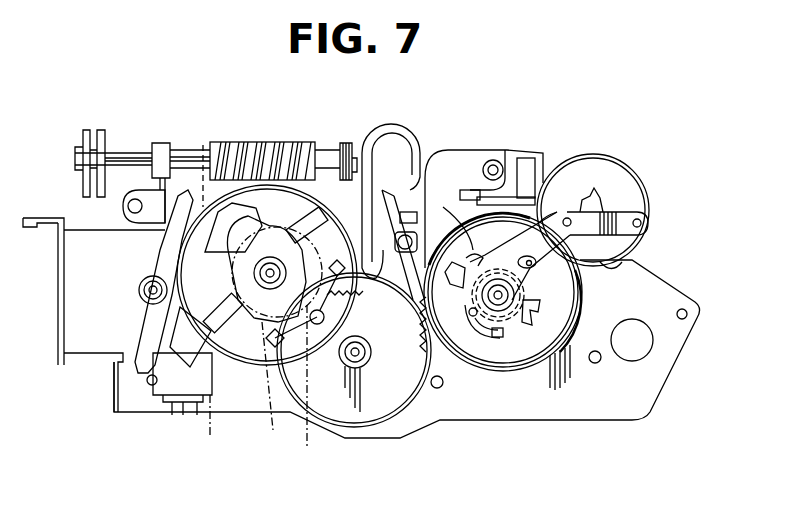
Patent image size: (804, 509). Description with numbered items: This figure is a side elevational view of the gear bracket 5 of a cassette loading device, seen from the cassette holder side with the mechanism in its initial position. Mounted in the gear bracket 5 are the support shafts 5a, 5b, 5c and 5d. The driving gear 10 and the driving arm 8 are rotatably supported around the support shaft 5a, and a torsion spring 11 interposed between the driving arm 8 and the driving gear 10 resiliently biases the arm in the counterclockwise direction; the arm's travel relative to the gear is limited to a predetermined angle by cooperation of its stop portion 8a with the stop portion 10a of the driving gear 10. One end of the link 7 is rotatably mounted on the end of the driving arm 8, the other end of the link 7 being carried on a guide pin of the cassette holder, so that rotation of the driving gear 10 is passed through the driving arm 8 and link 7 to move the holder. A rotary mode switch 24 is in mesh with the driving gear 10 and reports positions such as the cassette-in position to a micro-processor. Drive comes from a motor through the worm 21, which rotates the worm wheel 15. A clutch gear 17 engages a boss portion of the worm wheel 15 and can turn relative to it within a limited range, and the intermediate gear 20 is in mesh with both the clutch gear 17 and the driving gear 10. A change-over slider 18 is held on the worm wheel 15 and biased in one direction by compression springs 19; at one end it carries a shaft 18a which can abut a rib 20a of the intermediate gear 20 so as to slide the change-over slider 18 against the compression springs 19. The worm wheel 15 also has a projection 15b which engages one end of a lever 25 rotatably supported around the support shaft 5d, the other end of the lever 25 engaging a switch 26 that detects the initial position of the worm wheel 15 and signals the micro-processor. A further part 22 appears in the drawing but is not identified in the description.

The gear bracket 5 is at (668, 284).
The support shaft 5a is at (498, 312).
The support shaft 5b is at (352, 368).
The support shaft 5c is at (272, 258).
The support shaft 5d is at (140, 290).
The link 7 is at (623, 215).
The driving arm 8 is at (560, 213).
The stop portion 8a is at (472, 316).
The driving gear 10 is at (533, 378).
The stop portion 10a is at (507, 330).
The torsion spring 11 is at (442, 203).
The worm wheel 15 is at (328, 148).
The projection 15b is at (203, 145).
The clutch gear 17 is at (267, 320).
The change-over slider 18 is at (250, 360).
The shaft 18a is at (346, 311).
The compression springs 19 is at (300, 233).
The intermediate gear 20 is at (406, 413).
The rib 20a is at (322, 390).
The worm 21 is at (222, 142).
The pulley 22 is at (134, 152).
The mode switch 24 is at (610, 160).
The lever 25 is at (138, 322).
The switch 26 is at (188, 408).